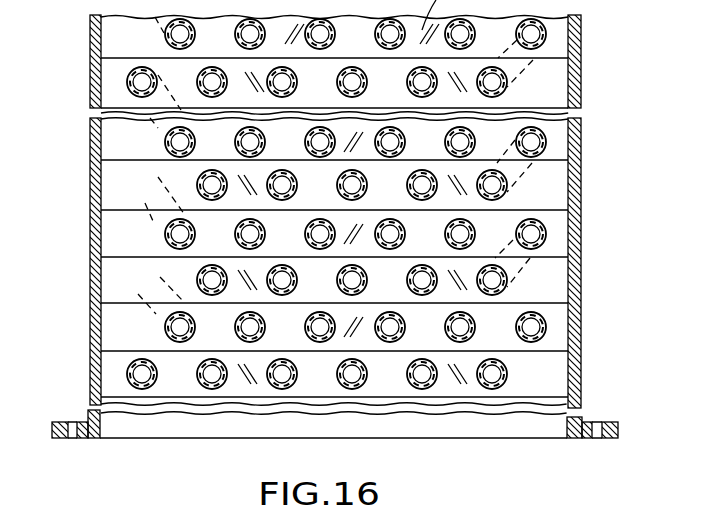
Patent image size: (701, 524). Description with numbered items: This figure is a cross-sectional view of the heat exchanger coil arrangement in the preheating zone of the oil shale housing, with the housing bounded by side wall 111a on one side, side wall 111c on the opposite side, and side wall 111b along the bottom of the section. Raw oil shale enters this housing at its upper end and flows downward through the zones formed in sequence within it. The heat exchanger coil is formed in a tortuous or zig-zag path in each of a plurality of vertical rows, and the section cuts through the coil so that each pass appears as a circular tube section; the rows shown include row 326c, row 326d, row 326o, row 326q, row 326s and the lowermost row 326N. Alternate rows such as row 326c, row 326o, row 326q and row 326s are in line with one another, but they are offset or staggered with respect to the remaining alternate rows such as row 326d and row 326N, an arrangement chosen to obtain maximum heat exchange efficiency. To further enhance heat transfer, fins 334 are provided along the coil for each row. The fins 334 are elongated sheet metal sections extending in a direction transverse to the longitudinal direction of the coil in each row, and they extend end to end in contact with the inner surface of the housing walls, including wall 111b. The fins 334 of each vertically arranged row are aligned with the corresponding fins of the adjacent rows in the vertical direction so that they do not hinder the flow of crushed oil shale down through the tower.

The vertical row of heat exchanger coil 326c is at (167, 39).
The vertical row of heat exchanger coil 326d is at (128, 81).
The vertical row of heat exchanger coil 326o is at (169, 136).
The vertical row of heat exchanger coil 326q is at (167, 236).
The vertical row of heat exchanger coil 326s is at (167, 329).
The vertical row of heat exchanger coil 326N is at (128, 374).
The fins 334 is at (181, 383).
The side wall 111a is at (90, 163).
The side wall 111b is at (448, 432).
The side wall 111c is at (580, 196).